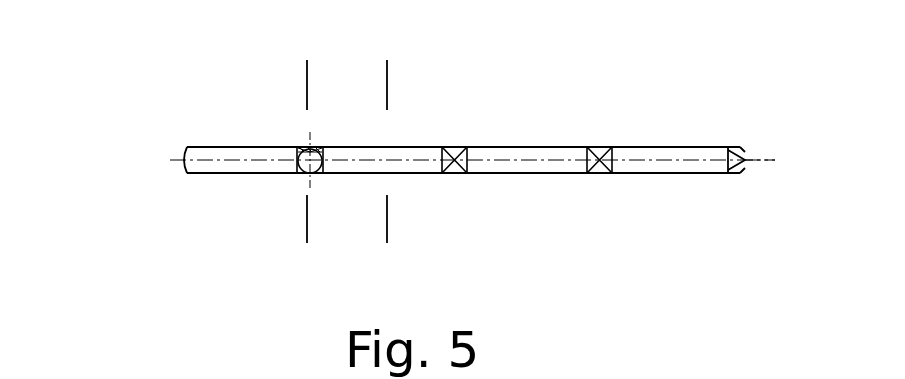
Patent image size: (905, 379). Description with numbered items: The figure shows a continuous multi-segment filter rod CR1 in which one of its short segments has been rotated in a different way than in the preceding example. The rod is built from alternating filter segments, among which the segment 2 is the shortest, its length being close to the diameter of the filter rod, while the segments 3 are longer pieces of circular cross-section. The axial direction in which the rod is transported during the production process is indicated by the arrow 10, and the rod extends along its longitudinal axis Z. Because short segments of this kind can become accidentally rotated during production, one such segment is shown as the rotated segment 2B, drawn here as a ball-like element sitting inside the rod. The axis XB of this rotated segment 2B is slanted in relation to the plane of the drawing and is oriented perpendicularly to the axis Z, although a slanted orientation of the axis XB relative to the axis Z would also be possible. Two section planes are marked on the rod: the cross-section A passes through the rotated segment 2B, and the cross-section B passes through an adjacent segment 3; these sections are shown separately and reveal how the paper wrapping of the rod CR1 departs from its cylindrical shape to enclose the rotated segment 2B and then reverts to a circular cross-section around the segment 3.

The arrow 10 is at (557, 199).
The continuous multi-segment rod CR1 is at (175, 122).
The rotated segment 2B is at (297, 147).
The axis of the rotated segment XB is at (310, 176).
The segment 2 is at (457, 147).
The segment 3 is at (653, 155).
The axis Z is at (762, 160).
The cross-section A- A is at (353, 68).
The cross-section B- B is at (437, 68).